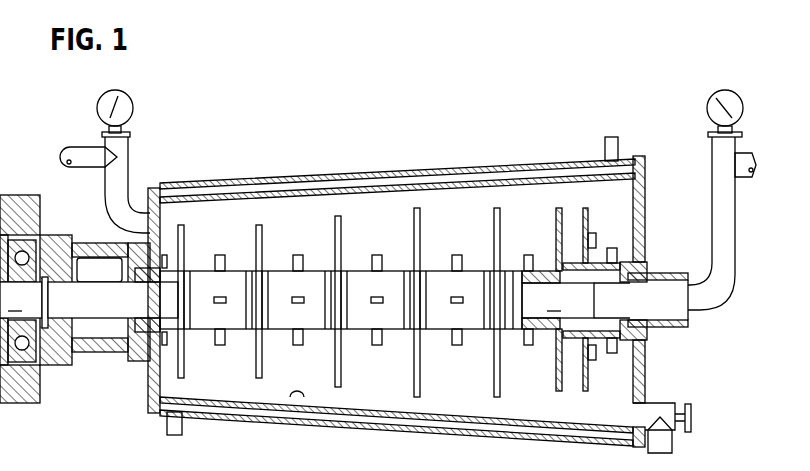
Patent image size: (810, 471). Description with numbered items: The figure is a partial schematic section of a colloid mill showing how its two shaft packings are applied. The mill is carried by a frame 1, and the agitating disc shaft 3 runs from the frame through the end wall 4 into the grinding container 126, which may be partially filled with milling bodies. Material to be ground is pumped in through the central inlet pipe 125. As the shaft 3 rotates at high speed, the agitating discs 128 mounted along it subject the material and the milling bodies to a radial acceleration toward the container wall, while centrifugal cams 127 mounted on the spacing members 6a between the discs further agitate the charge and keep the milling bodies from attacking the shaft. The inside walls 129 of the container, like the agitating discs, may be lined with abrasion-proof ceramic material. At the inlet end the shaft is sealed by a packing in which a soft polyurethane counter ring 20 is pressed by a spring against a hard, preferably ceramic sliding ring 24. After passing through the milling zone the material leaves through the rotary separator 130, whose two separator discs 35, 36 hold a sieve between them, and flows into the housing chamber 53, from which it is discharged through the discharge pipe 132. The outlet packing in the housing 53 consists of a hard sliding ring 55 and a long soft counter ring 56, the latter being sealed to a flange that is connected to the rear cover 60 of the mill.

The frame 1 is at (23, 196).
The shaft 3 is at (315, 302).
The end wall 4 is at (148, 382).
The spacing members 6a is at (233, 314).
The counter ring 20 is at (132, 285).
The sliding ring 24 is at (170, 325).
The separator disc 35 is at (554, 215).
The separator disc 36 is at (586, 217).
The housing 53 is at (652, 275).
The sliding ring 55 is at (623, 247).
The counter ring 56 is at (643, 333).
The rear cover 60 is at (642, 194).
The central inlet pipe 125 is at (117, 173).
The grinding container 126 is at (387, 198).
The centrifugal cams 127 is at (382, 296).
The agitating discs 128 is at (184, 232).
The inside walls 129 is at (297, 398).
The rotary separator 130 is at (568, 198).
The discharge pipe 132 is at (726, 283).